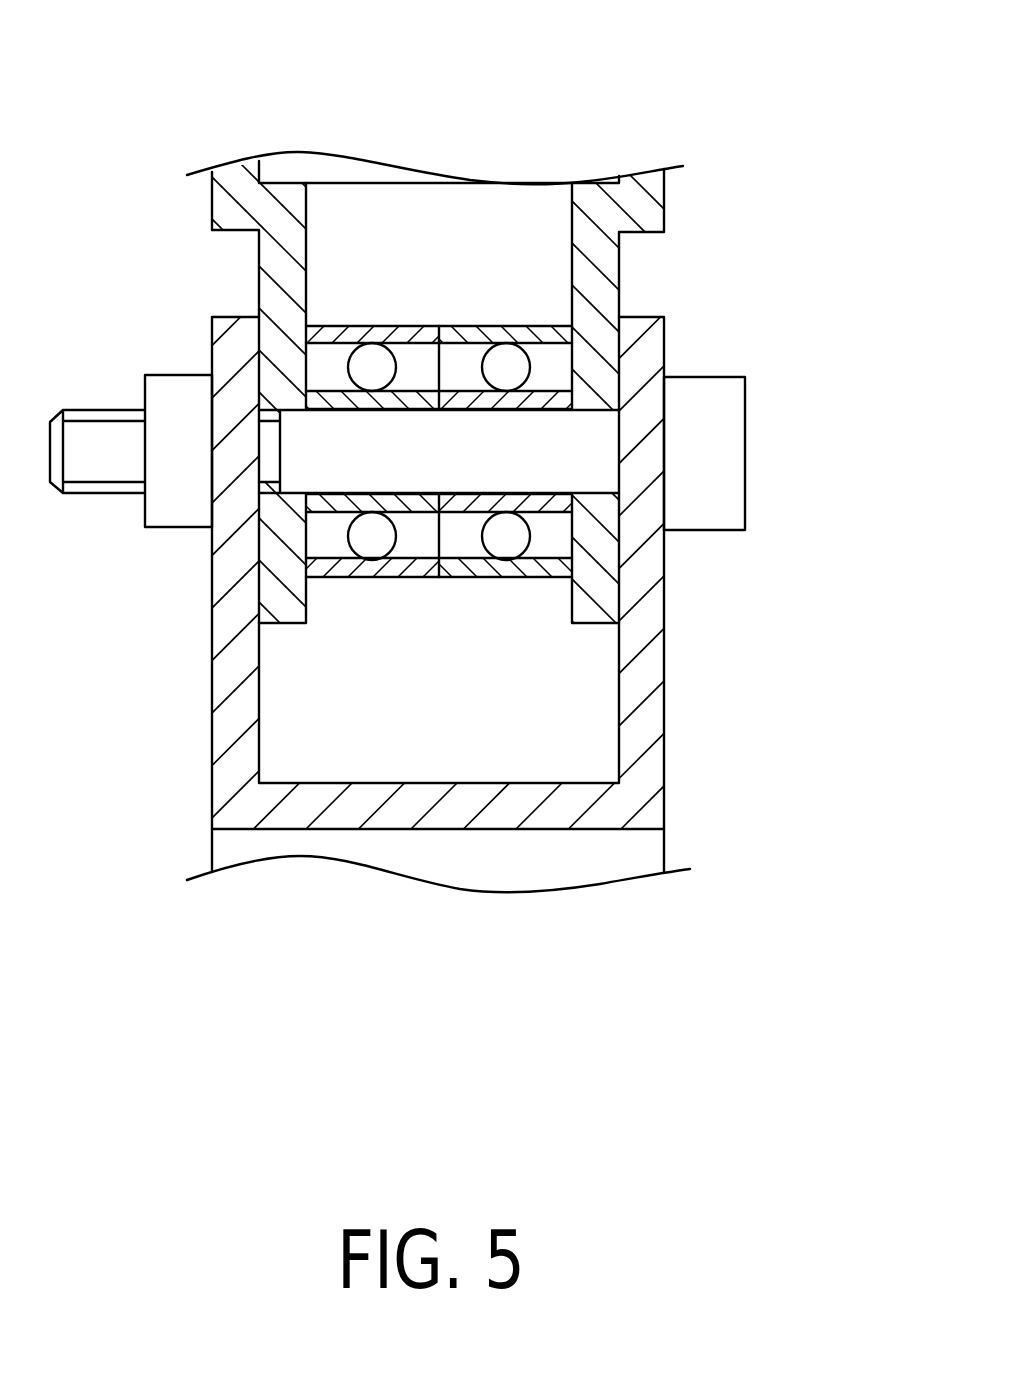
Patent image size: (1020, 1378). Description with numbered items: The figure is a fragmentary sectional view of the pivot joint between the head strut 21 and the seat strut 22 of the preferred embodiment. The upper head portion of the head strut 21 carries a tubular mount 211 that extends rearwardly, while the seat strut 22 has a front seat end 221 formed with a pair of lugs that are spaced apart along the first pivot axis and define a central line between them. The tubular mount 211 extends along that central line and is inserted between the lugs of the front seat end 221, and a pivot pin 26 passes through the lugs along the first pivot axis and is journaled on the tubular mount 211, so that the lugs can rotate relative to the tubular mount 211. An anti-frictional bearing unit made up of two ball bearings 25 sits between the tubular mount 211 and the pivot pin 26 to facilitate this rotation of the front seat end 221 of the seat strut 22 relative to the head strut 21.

The head strut 21 is at (510, 320).
The tubular mount of the upper head portion 211 is at (598, 285).
The seat strut 22 is at (510, 674).
The front seat end 221 is at (643, 682).
The ball bearings 25 is at (366, 326).
The pivot pin 26 is at (592, 453).